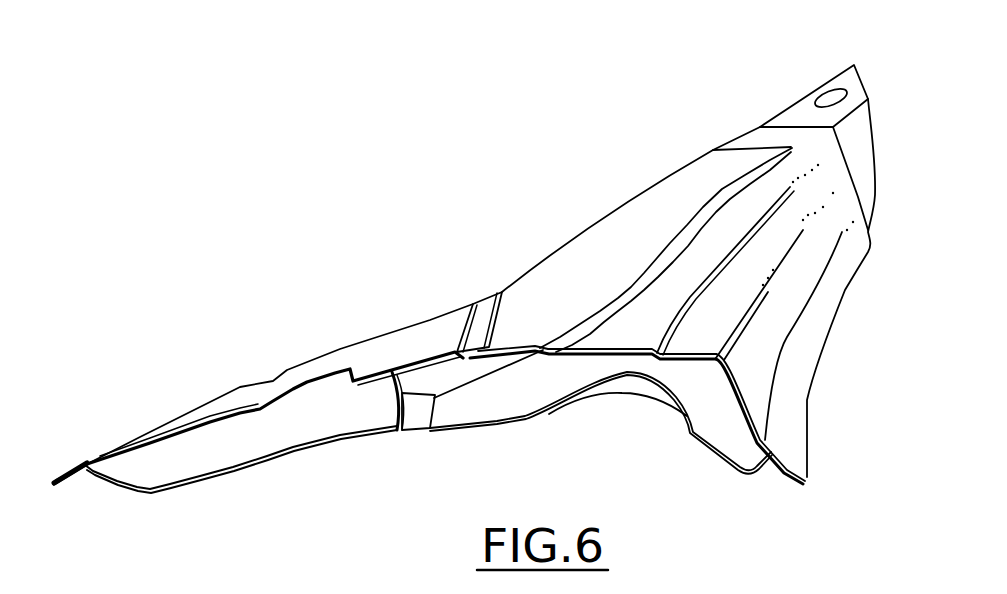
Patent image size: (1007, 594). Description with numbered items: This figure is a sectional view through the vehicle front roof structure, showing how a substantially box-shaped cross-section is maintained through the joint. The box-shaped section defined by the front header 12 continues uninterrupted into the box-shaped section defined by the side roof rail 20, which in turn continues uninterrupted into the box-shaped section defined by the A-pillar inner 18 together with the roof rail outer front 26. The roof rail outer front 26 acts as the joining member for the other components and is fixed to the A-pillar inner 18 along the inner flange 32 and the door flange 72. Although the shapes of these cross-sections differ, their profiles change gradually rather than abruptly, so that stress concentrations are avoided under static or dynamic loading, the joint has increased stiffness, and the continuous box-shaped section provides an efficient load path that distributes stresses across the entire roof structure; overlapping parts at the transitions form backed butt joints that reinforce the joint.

The front header 12 is at (238, 386).
The A-pillar inner member 18 is at (518, 410).
The side roof rail 20 is at (812, 70).
The roof rail outer front 26 is at (553, 280).
The inner flange 32 is at (790, 472).
The door flange 72 is at (794, 425).